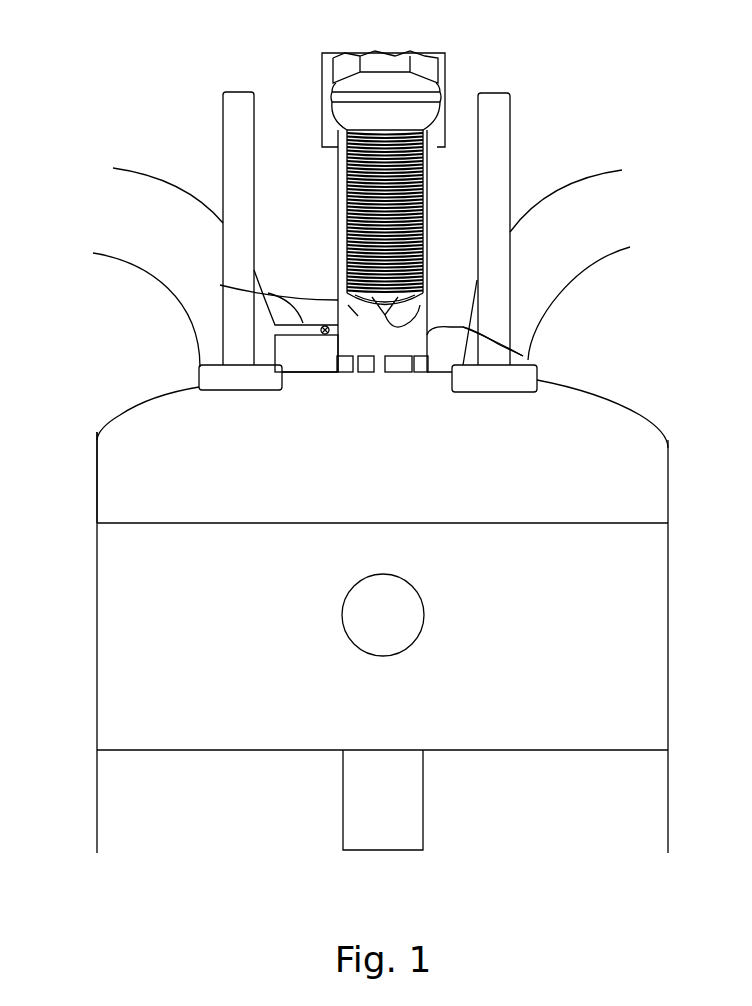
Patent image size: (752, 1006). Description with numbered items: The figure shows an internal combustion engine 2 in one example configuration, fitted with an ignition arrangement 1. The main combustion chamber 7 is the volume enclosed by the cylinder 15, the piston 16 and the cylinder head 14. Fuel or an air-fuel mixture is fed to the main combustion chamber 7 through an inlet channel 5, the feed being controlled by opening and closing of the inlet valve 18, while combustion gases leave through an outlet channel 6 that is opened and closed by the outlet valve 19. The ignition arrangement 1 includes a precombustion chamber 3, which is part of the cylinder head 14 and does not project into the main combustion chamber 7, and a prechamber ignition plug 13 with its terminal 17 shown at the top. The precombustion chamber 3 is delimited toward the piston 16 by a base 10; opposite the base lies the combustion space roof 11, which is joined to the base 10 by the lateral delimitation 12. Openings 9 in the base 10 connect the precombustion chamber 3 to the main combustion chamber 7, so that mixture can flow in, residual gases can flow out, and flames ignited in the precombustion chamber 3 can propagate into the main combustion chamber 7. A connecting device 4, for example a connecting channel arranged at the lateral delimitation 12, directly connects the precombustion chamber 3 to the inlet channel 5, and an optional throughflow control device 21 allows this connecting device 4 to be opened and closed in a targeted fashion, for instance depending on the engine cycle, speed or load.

The ignition arrangement 1 is at (622, 112).
The internal combustion engine 2 is at (185, 68).
The precombustion chamber 3 is at (338, 300).
The connecting device 4 is at (220, 285).
The inlet channel 5 is at (192, 310).
The outlet channel 6 is at (585, 242).
The main combustion chamber 7 is at (643, 467).
The openings 9 is at (358, 374).
The base 10 is at (370, 374).
The combustion space roof 11 is at (422, 283).
The lateral delimitation 12 is at (523, 356).
The prechamber ignition plug 13 is at (432, 113).
The cylinder head 14 is at (613, 393).
The cylinder 15 is at (97, 485).
The piston 16 is at (642, 630).
The spark plug terminal 17 is at (445, 72).
The inlet valve 18 is at (223, 140).
The outlet valve 19 is at (510, 135).
The throughflow control device 21 is at (321, 334).